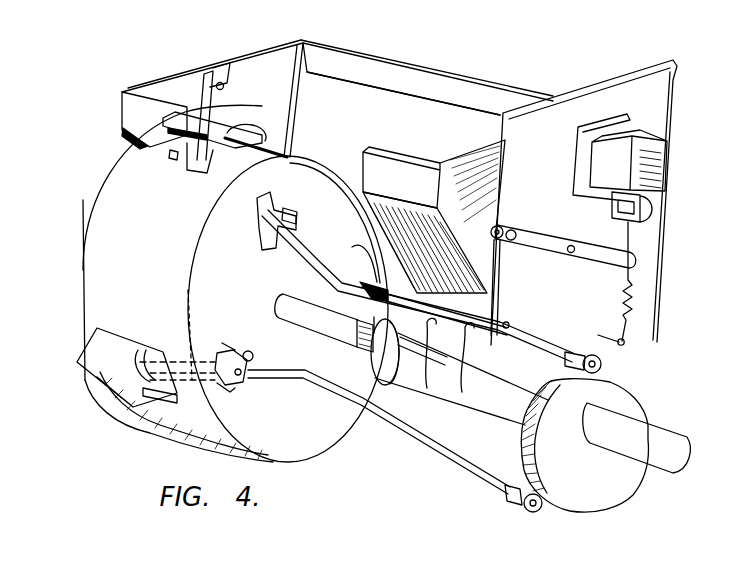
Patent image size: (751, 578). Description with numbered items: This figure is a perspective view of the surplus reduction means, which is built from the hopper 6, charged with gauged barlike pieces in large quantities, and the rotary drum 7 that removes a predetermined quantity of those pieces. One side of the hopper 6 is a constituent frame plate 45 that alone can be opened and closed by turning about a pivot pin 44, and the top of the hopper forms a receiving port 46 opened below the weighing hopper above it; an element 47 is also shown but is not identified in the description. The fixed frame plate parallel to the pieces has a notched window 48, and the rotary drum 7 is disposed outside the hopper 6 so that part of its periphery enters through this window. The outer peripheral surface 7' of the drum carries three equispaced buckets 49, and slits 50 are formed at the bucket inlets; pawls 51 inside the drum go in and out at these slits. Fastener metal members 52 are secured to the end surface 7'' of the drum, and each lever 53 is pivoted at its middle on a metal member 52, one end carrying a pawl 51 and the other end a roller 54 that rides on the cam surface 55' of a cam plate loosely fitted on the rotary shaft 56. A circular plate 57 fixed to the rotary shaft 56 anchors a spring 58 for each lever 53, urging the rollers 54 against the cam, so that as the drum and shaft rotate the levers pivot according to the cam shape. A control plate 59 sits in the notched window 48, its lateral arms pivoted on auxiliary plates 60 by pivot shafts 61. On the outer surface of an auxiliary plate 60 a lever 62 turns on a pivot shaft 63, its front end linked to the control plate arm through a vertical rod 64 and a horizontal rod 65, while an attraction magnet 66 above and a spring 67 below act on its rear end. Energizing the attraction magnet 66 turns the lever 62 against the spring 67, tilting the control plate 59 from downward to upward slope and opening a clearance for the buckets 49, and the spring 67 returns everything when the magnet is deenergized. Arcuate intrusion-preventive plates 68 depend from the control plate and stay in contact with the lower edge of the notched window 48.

The hopper 6 is at (447, 74).
The rotary drum 7 is at (214, 283).
The outer peripheral surface of the rotary drum 7' is at (67, 290).
The end surface of the rotary drum 7'' is at (173, 327).
The pivot pin 44 is at (222, 84).
The constituent frame plate 45 is at (280, 67).
The receiving port 46 is at (391, 73).
The front block 47 is at (148, 115).
The notched window 48 is at (358, 148).
The buckets 49 is at (225, 130).
The slits 50 is at (160, 158).
The pawls 51 is at (200, 157).
The fastener metal members 52 is at (258, 246).
The lever 53 is at (297, 262).
The roller 54 is at (255, 210).
The cam surface 55' is at (558, 445).
The rotary shaft 56 is at (285, 304).
The circular plate 57 is at (383, 374).
The spring 58 is at (378, 315).
The control plate 59 is at (358, 259).
The auxiliary plates 60 is at (608, 82).
The pivot shafts 61 is at (510, 326).
The lever 62 is at (548, 238).
The pivot shaft 63 is at (571, 253).
The vertical rod 64 is at (503, 290).
The horizontal rod 65 is at (406, 361).
The attraction magnet 66 is at (667, 152).
The spring 67 is at (626, 310).
The intrusion-preventive plates 68 is at (461, 374).